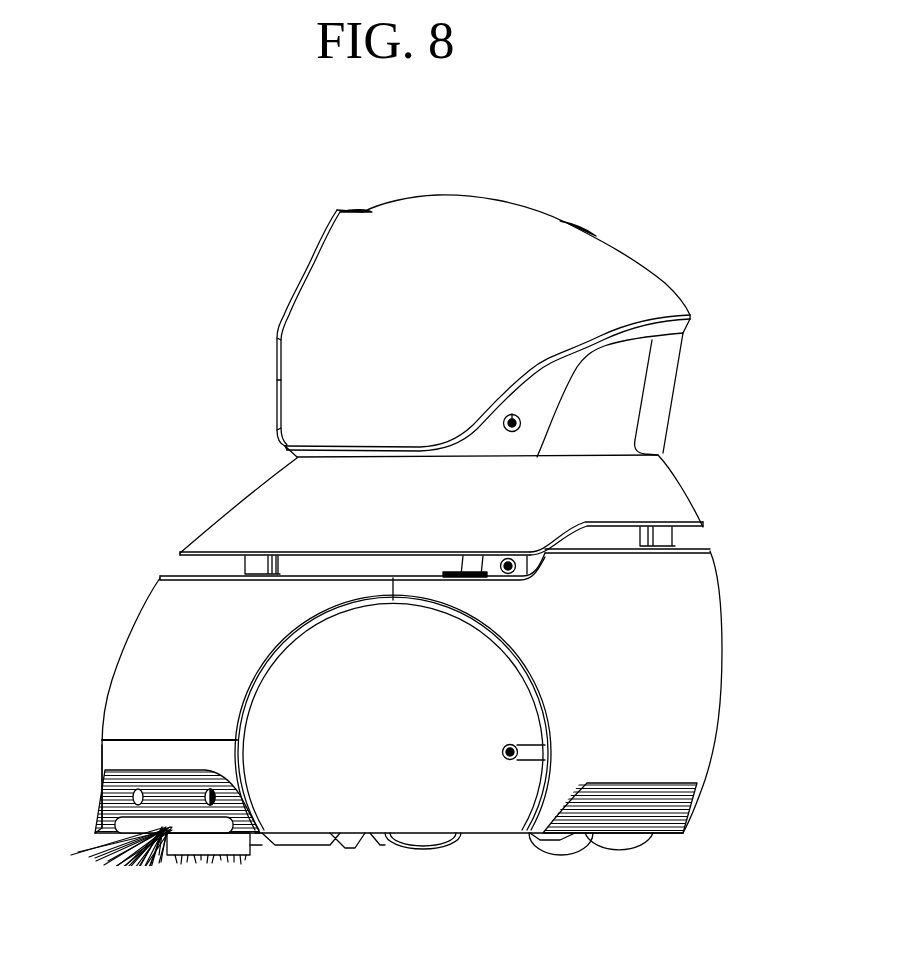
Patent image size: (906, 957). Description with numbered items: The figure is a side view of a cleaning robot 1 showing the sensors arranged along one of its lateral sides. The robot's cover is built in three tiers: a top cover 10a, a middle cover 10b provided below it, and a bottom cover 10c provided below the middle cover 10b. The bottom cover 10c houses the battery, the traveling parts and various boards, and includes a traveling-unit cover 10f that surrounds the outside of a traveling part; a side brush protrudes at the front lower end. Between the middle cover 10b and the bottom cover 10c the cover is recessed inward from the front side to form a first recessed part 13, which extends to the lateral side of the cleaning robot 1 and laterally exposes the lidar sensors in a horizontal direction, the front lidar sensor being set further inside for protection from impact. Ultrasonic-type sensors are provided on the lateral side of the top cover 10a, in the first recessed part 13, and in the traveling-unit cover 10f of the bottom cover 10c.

The cleaning robot 1 is at (525, 167).
The top cover 10a is at (631, 273).
The middle cover 10b is at (258, 497).
The bottom cover 10c is at (133, 640).
The traveling-unit cover 10f is at (393, 800).
The first recessed part 13 is at (178, 564).